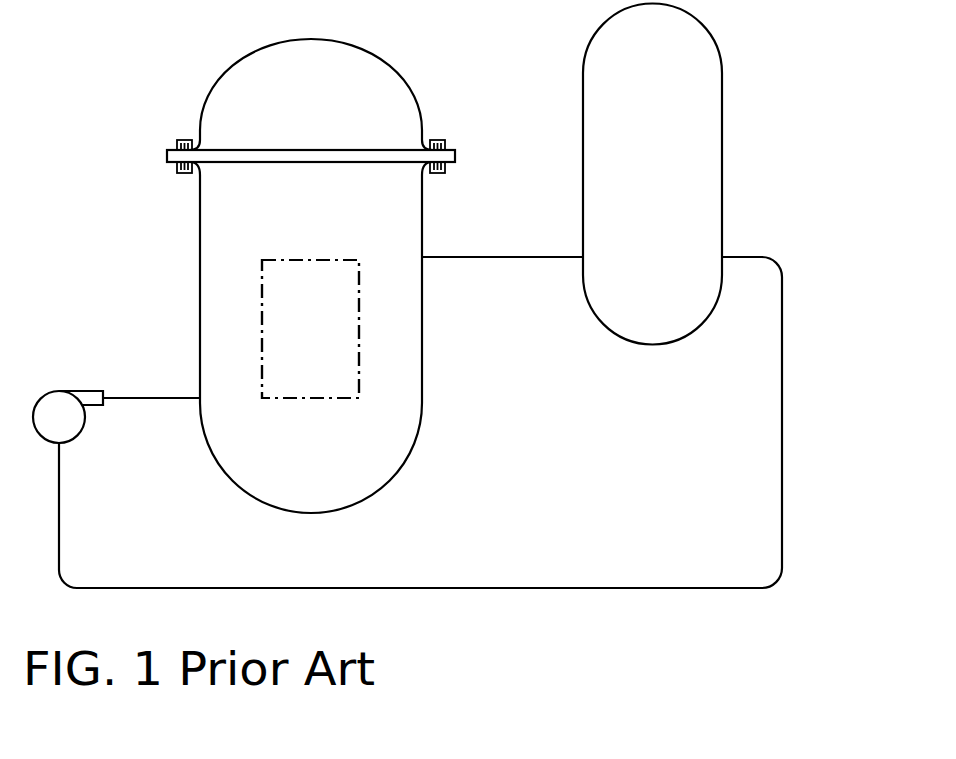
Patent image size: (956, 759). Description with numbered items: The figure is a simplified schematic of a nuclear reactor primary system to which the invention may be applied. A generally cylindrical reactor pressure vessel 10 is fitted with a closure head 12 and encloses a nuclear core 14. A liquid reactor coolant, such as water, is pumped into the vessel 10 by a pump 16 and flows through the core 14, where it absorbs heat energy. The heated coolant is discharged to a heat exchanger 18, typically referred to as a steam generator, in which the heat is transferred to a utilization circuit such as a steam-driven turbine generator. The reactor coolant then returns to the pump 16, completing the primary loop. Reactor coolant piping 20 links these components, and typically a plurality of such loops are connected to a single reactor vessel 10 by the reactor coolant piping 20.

The reactor pressure vessel 10 is at (325, 341).
The closure head 12 is at (210, 98).
The nuclear core 14 is at (233, 329).
The pump 16 is at (57, 392).
The heat exchanger 18 is at (723, 112).
The reactor coolant piping 20 is at (782, 517).